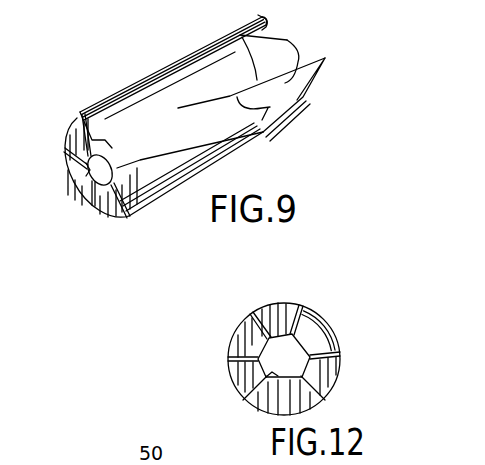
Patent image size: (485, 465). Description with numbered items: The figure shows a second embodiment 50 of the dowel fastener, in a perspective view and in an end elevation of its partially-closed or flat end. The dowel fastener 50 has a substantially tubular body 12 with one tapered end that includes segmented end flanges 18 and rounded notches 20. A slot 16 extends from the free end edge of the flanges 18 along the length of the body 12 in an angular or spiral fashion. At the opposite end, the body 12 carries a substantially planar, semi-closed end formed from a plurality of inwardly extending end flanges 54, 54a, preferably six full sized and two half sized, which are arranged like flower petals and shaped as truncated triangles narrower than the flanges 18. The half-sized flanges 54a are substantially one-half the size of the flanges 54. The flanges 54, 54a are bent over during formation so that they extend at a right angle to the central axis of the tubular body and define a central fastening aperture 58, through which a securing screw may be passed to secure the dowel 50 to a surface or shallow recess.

In FIG. 9, the tubular body 12 is at (210, 91).
In FIG. 9, the slot 16 is at (172, 148).
In FIG. 9, the segmented end flanges 18 is at (283, 62).
In FIG. 9, the rounded notches 20 is at (268, 32).
In FIG. 9, the second embodiment of the dowel fastener 50 is at (155, 63).
In FIG. 12, the second embodiment of the dowel fastener 50 is at (342, 320).
In FIG. 9, the end flanges 54 is at (103, 208).
In FIG. 12, the end flanges 54 is at (242, 365).
In FIG. 9, the half-sized end flanges 54a is at (107, 140).
In FIG. 12, the half-sized end flanges 54a is at (295, 320).
In FIG. 9, the central fastening aperture 58 is at (90, 167).
In FIG. 12, the central fastening aperture 58 is at (267, 378).